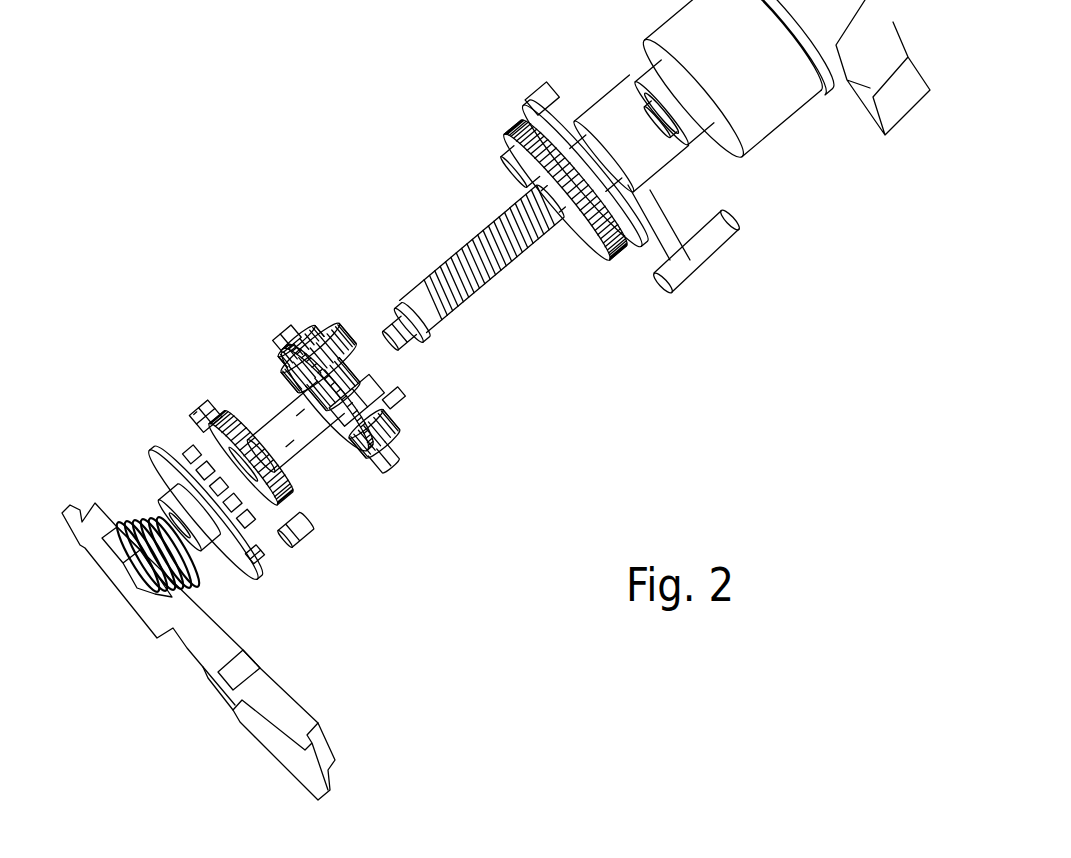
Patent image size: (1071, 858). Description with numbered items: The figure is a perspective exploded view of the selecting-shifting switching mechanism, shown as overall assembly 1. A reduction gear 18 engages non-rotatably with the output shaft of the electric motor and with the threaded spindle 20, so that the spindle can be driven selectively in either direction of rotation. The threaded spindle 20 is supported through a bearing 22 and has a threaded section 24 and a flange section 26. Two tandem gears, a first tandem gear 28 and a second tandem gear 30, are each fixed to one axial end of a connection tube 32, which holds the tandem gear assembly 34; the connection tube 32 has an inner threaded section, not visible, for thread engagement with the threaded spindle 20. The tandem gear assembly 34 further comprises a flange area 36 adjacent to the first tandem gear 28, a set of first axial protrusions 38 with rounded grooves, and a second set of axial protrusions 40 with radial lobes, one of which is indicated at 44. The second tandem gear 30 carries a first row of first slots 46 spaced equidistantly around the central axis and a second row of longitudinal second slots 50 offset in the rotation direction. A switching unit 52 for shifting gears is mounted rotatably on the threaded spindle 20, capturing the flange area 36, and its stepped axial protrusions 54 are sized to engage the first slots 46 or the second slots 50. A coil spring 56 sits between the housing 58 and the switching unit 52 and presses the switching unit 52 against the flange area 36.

The drive assembly 1 is at (582, 372).
The reduction gear 18 is at (608, 100).
The threaded spindle 20 is at (463, 257).
The bearing 22 is at (580, 110).
The threaded section 24 is at (566, 222).
The flange section 26 is at (447, 333).
The first tandem gear 28 is at (390, 457).
The second tandem gear 30 is at (307, 522).
The connection tube 32 is at (312, 452).
The tandem gear assembly 34 is at (266, 286).
The flange area 36 is at (316, 300).
The first axial protrusions 38 is at (395, 430).
The output assembly 40 is at (283, 550).
The key 44 is at (403, 397).
The first slots 46 is at (207, 443).
The second slots 50 is at (208, 423).
The switching unit 52 is at (158, 450).
The stepped axial protrusions 54 is at (270, 547).
The coil spring 56 is at (140, 520).
The housing 58 is at (183, 653).